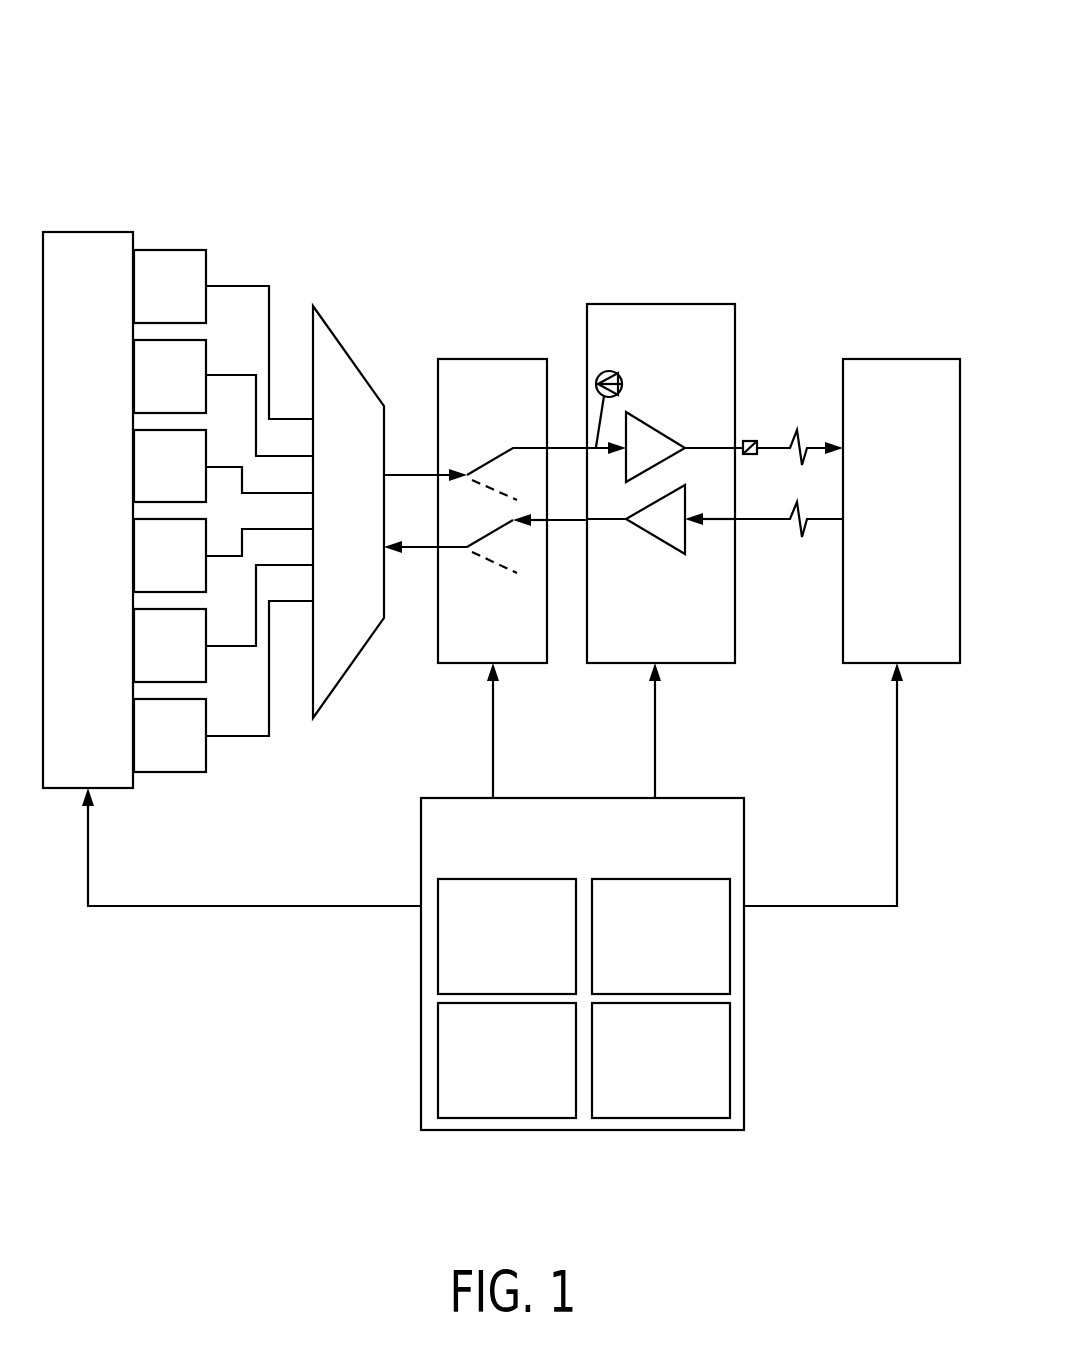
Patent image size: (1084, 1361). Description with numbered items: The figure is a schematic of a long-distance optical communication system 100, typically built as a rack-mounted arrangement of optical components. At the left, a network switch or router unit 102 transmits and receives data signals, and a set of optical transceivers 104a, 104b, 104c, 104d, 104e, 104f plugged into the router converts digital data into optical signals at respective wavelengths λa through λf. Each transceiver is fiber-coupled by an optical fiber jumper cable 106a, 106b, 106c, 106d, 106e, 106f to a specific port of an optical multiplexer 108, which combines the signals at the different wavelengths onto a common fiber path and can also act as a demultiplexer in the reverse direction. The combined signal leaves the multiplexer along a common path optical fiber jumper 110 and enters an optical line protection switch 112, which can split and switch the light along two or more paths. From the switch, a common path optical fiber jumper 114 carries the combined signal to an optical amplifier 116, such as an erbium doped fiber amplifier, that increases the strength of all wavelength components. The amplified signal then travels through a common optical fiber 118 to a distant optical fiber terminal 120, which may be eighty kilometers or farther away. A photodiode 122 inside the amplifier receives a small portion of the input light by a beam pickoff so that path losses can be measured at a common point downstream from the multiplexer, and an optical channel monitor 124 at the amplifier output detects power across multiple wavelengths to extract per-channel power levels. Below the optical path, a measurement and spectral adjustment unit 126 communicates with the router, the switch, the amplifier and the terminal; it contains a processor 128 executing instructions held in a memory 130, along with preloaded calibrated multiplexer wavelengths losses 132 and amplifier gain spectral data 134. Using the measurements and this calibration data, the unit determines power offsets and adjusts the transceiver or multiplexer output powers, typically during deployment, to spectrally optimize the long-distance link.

The communication system 100 is at (412, 45).
The network switch or router unit 102 is at (88, 510).
The optical transceiver 104a is at (170, 286).
The optical transceiver 104b is at (170, 376).
The optical transceiver 104c is at (170, 466).
The optical transceiver 104d is at (170, 555).
The optical transceiver 104e is at (170, 645).
The optical transceiver 104f is at (170, 735).
The optical fiber jumper cable 106a is at (222, 285).
The optical fiber jumper cable 106b is at (219, 375).
The optical fiber jumper cable 106c is at (223, 465).
The optical fiber jumper cable 106d is at (222, 557).
The optical fiber jumper cable 106e is at (218, 647).
The optical fiber jumper cable 106f is at (223, 737).
The optical multiplexer 108 is at (348, 512).
The common path optical fiber jumper 110 is at (402, 473).
The optical line protection switch 112 is at (492, 511).
The common path optical fiber jumper 114 is at (567, 445).
The optical amplifier 116 is at (665, 483).
The common optical fiber 118 is at (785, 446).
The distant optical fiber terminal 120 is at (901, 511).
The photodiode 122 is at (609, 371).
The optical channel monitor 124 is at (752, 441).
The measurement and spectral adjustment unit 126 is at (492, 896).
The processor 128 is at (507, 936).
The memory 130 is at (661, 936).
The calibrated multiplexer wavelengths losses 132 is at (507, 1060).
The amplifier gain spectral data 134 is at (661, 1060).